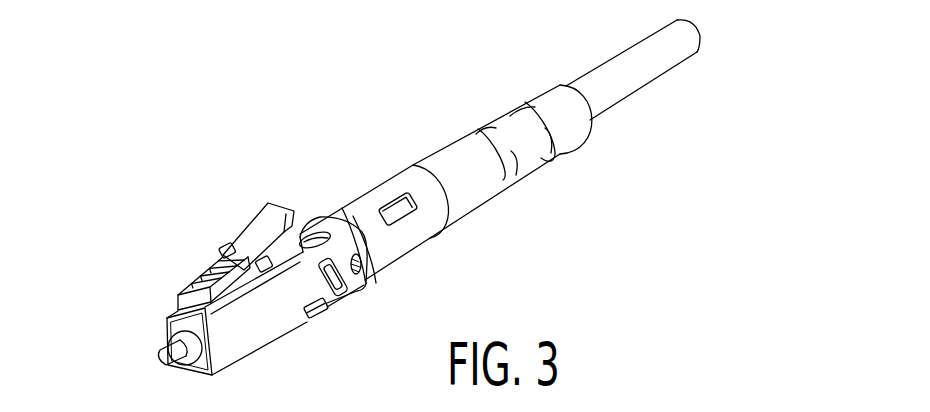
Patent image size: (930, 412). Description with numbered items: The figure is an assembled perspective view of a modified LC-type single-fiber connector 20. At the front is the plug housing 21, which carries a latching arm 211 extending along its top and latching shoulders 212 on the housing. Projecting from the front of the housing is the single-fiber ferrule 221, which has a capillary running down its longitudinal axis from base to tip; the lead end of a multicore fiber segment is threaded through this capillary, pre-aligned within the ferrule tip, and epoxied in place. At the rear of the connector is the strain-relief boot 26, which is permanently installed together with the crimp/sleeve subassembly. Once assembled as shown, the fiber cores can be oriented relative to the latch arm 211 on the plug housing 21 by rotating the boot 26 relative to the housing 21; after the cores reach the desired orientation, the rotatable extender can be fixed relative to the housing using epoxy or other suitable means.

The connector 20 is at (382, 86).
The plug housing 21 is at (223, 343).
The latching arm 211 is at (258, 237).
The latching shoulders 212 is at (226, 249).
The single-fiber ferrule 221 is at (158, 356).
The strain-relief boot 26 is at (488, 182).